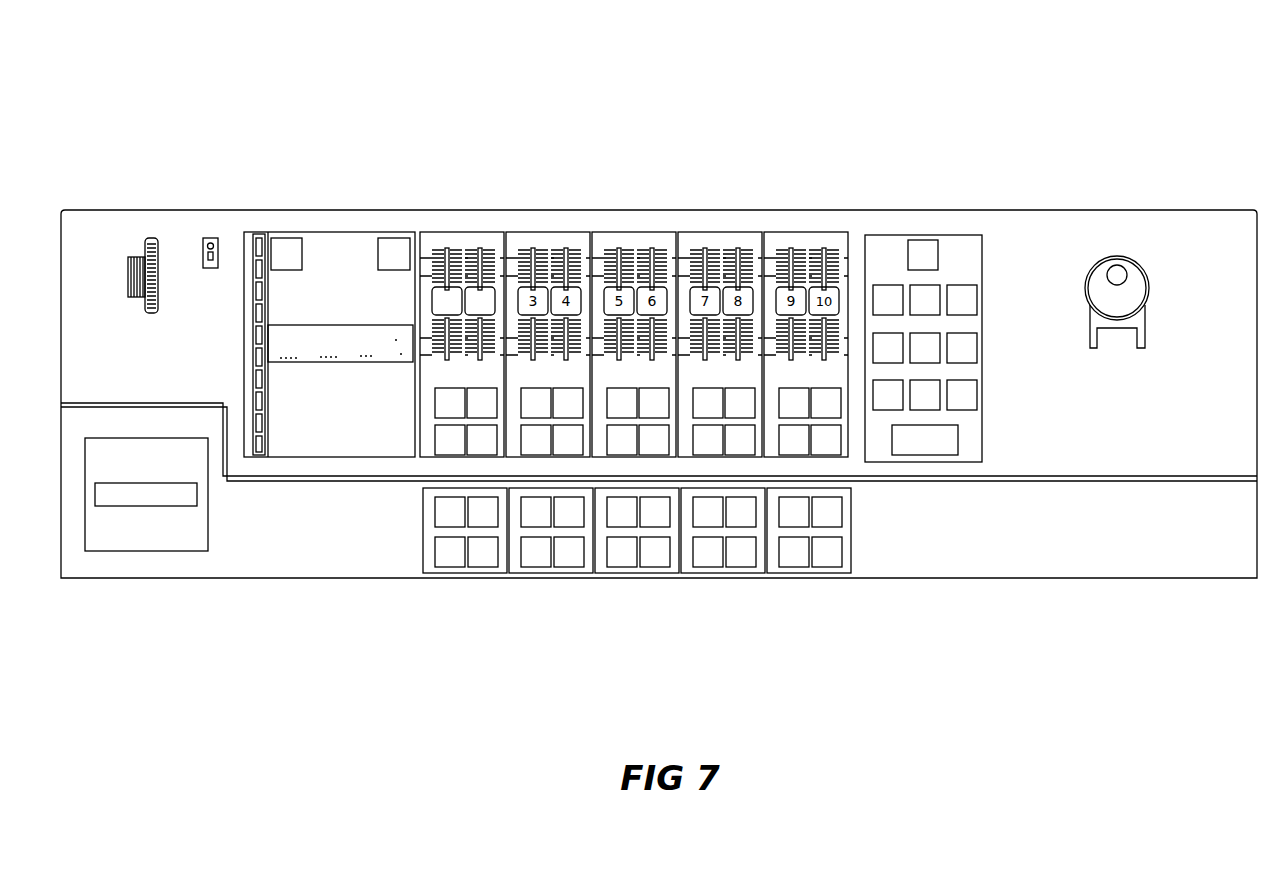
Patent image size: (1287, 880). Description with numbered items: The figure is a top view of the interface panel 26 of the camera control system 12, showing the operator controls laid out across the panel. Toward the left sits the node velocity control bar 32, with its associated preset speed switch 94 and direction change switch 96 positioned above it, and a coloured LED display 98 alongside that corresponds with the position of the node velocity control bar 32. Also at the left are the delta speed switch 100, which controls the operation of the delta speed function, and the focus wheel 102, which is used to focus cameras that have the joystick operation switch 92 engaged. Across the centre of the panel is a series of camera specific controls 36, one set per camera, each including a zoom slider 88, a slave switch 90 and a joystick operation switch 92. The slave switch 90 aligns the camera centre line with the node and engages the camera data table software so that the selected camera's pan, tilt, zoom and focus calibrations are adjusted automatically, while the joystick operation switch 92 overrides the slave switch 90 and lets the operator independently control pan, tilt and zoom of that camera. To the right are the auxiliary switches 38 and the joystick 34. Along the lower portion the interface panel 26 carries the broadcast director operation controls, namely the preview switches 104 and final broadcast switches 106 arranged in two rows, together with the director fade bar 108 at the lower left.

The control unit 12 is at (1038, 95).
The interface panel 26 is at (868, 210).
The node velocity control bar 32 is at (346, 333).
The joystick 34 is at (1135, 275).
The camera specific controls 36 is at (451, 318).
The auxiliary switches 38 is at (982, 355).
The zoom slider 88 is at (706, 262).
The slave switch 90 is at (450, 408).
The joystick operation switch 92 is at (432, 442).
The preset speed switch 94 is at (287, 247).
The direction change switch 96 is at (393, 243).
The coloured LED display 98 is at (251, 347).
The delta speed switch 100 is at (212, 238).
The focus wheel 102 is at (143, 258).
The preview switches 104 is at (835, 512).
The final broadcast switches 106 is at (838, 555).
The director fade bar 108 is at (143, 497).